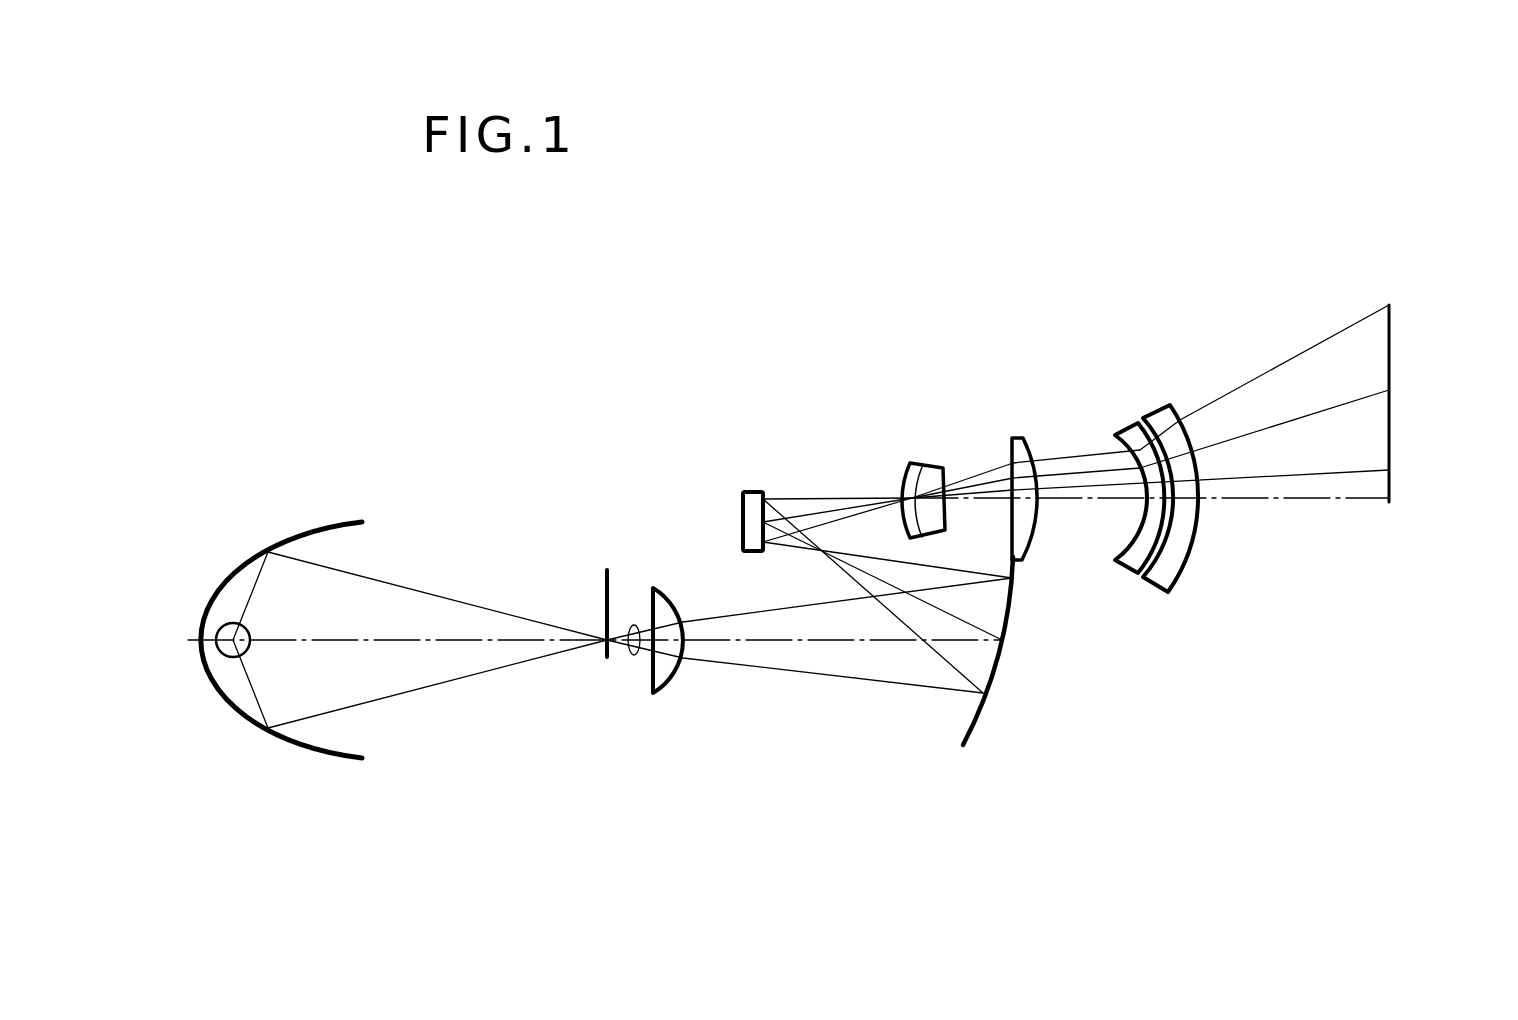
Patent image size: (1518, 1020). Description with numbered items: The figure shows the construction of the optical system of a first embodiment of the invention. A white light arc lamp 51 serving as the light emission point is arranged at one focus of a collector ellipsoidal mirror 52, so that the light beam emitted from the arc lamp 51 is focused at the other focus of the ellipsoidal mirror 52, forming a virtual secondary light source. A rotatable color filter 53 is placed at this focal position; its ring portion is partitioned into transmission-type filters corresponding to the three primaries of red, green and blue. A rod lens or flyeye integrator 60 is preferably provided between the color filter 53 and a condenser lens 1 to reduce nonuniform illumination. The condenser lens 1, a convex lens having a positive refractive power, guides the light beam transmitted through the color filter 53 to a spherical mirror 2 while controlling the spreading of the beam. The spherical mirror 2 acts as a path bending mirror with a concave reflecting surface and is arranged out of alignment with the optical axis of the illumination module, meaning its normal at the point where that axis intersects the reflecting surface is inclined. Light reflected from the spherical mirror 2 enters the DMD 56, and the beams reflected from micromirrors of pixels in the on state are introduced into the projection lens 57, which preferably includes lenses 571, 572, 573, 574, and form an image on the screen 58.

The condenser lens 1 is at (668, 683).
The spherical mirror 2 is at (978, 723).
The white light arc lamp 51 is at (222, 625).
The collector ellipsoidal mirror 52 is at (323, 522).
The rotatable color filter 53 is at (596, 578).
The DMD 56 is at (752, 490).
The projection lens 57 is at (1072, 408).
The lens 571 is at (922, 458).
The lens 572 is at (1023, 435).
The lens 573 is at (1128, 433).
The lens 574 is at (1191, 453).
The screen 58 is at (1392, 362).
The rod lens or flyeye integrator 60 is at (633, 657).